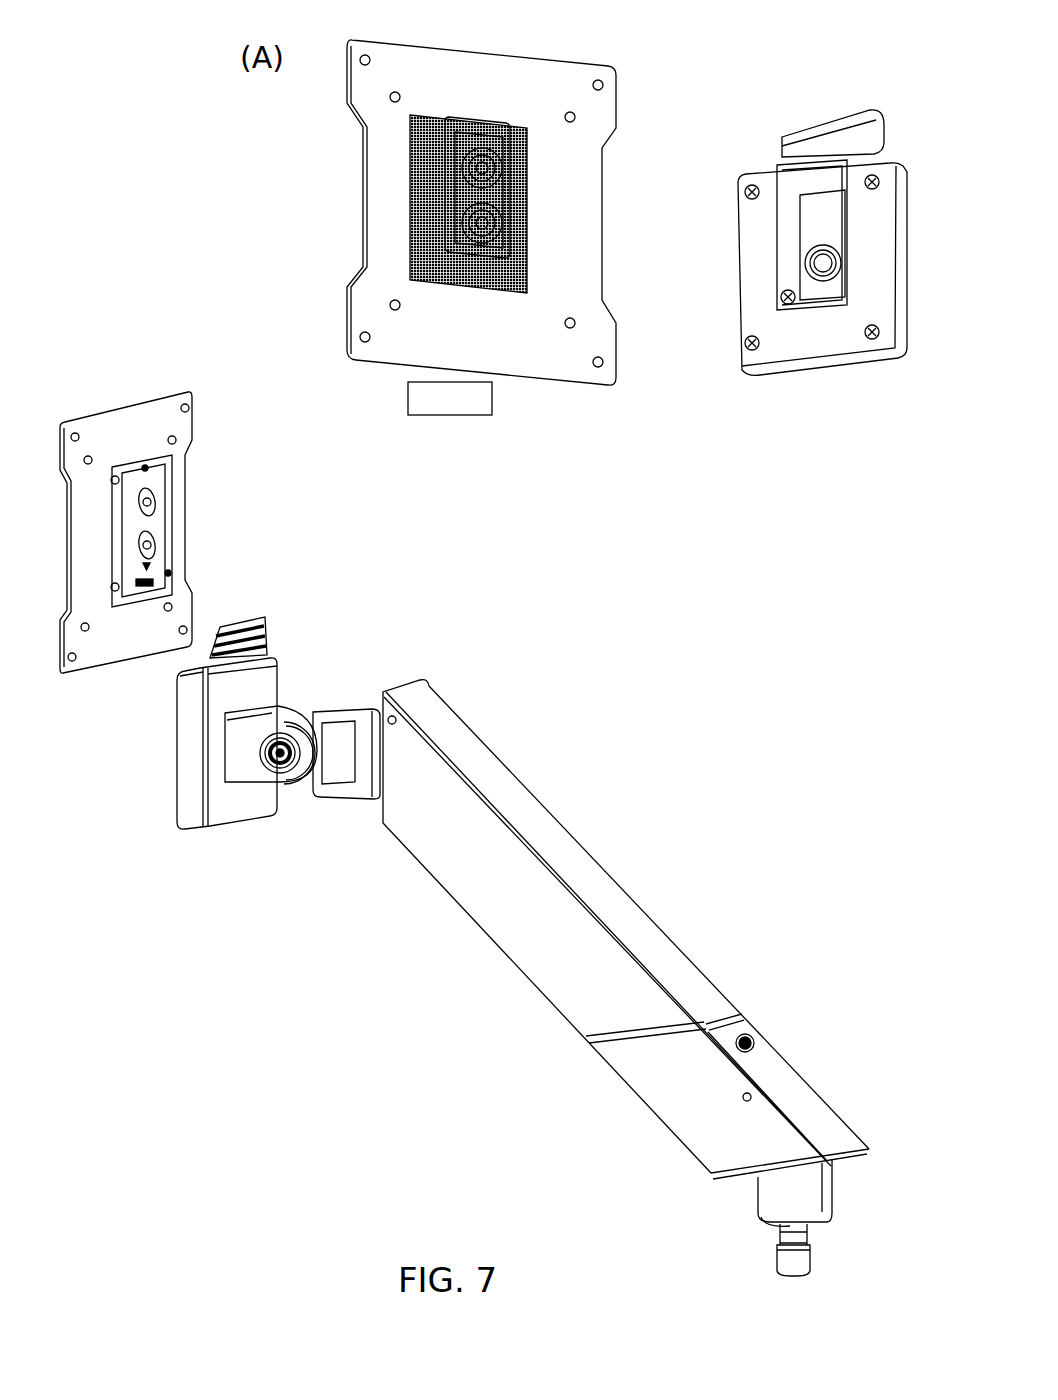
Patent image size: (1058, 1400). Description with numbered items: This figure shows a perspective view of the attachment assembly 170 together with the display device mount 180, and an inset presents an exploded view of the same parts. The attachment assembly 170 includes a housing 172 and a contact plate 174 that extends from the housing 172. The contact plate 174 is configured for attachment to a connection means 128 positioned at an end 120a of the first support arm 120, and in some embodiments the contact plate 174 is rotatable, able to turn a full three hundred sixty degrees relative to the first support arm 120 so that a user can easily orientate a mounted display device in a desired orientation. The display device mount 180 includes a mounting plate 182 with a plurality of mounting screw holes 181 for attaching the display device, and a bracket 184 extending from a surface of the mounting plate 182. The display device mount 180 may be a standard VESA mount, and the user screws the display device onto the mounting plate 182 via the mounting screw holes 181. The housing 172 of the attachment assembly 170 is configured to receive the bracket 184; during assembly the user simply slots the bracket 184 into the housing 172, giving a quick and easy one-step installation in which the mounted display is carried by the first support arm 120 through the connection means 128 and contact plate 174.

The first support arm 120 is at (599, 868).
The end of the first support arm 120a is at (417, 723).
The connection means 128 is at (345, 682).
The attachment assembly 170 is at (813, 137).
The housing 172 is at (822, 343).
The contact plate 174 is at (240, 735).
The display device mount 180 is at (512, 53).
The mounting screw holes 181 is at (603, 88).
The mounting plate 182 is at (573, 243).
The bracket 184 is at (462, 267).